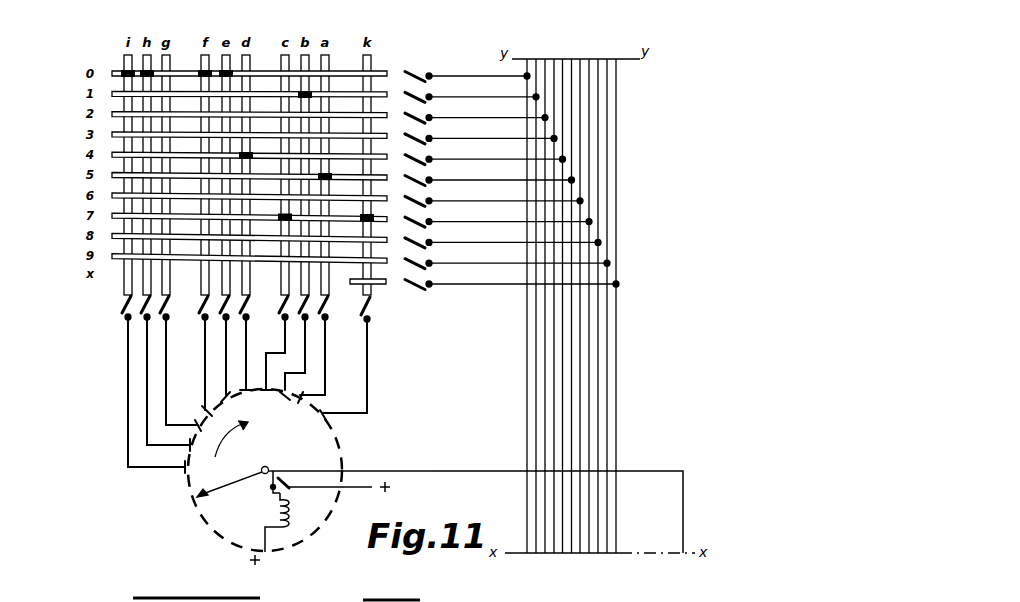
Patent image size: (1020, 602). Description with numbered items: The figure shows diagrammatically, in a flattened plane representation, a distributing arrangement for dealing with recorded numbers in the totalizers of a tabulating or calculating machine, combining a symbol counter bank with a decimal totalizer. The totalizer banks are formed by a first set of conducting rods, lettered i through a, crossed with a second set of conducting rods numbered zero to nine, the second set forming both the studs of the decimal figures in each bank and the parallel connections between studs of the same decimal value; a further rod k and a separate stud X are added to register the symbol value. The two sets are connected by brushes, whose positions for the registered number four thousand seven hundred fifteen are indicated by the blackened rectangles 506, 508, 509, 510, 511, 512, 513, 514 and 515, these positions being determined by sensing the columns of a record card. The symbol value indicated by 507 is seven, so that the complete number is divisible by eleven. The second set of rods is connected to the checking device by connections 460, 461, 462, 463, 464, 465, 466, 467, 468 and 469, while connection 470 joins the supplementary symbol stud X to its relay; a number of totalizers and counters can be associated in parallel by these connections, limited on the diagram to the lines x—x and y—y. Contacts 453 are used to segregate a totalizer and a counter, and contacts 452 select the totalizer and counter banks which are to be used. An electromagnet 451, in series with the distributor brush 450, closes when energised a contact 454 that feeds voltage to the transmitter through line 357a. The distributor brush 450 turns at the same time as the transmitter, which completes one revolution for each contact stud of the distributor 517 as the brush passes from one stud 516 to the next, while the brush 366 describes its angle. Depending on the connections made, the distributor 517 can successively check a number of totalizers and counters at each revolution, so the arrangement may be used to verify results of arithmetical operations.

The blackened rectangle 514 is at (120, 70).
The blackened rectangle 515 is at (113, 74).
The blackened rectangle 513 is at (172, 68).
The blackened rectangle 512 is at (205, 68).
The blackened rectangle 511 is at (232, 68).
The blackened rectangle 508 is at (307, 88).
The blackened rectangle 510 is at (254, 149).
The blackened rectangle 506 is at (326, 173).
The blackened rectangle 509 is at (283, 213).
The symbol value 507 is at (373, 216).
The contacts 453 is at (418, 57).
The contacts 452 is at (390, 310).
The connection 460 is at (478, 70).
The connection 461 is at (482, 91).
The connection 462 is at (487, 112).
The connection 463 is at (491, 132).
The connection 464 is at (496, 153).
The connection 465 is at (500, 174).
The connection 466 is at (504, 195).
The connection 467 is at (509, 216).
The connection 468 is at (513, 236).
The connection 469 is at (518, 257).
The connection 470 is at (522, 278).
The contact stud 516 is at (187, 488).
The distributor 517 is at (261, 439).
The distributor brush 450 is at (240, 484).
The electromagnet 451 is at (274, 510).
The contact 454 is at (288, 486).
The brush 366 is at (380, 470).
The line 357a is at (453, 470).